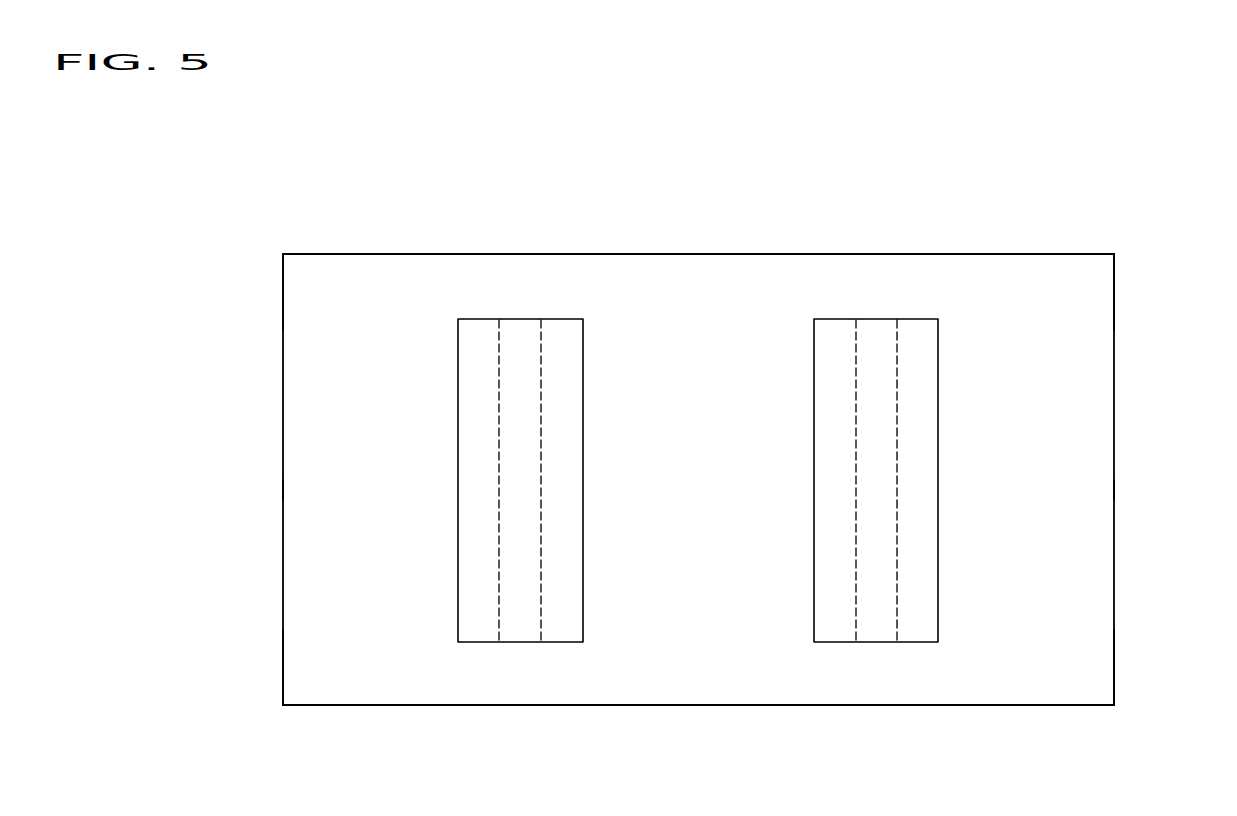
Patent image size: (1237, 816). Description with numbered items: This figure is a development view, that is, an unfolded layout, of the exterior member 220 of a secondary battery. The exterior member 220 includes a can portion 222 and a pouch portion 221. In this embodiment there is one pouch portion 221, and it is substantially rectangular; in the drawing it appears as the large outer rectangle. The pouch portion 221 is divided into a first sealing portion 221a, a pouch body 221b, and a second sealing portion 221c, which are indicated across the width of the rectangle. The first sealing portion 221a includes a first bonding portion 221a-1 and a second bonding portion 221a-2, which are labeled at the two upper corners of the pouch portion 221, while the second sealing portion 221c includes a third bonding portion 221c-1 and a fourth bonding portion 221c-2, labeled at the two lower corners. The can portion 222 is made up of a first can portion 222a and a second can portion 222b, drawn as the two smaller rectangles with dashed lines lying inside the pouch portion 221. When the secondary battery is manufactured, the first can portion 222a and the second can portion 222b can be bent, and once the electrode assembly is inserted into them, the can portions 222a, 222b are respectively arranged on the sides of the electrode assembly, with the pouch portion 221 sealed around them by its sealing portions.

The exterior member 220 is at (914, 203).
The pouch portion 221 is at (785, 199).
The first sealing portion 221a is at (601, 295).
The pouch body 221b is at (688, 482).
The second sealing portion 221c is at (781, 683).
The first bonding portion 221a-1 is at (283, 278).
The second bonding portion 221a-2 is at (1114, 282).
The third bonding portion 221c-1 is at (283, 690).
The fourth bonding portion 221c-2 is at (1114, 693).
The can portion 222 is at (542, 763).
The first can portion 222a is at (516, 628).
The second can portion 222b is at (880, 630).